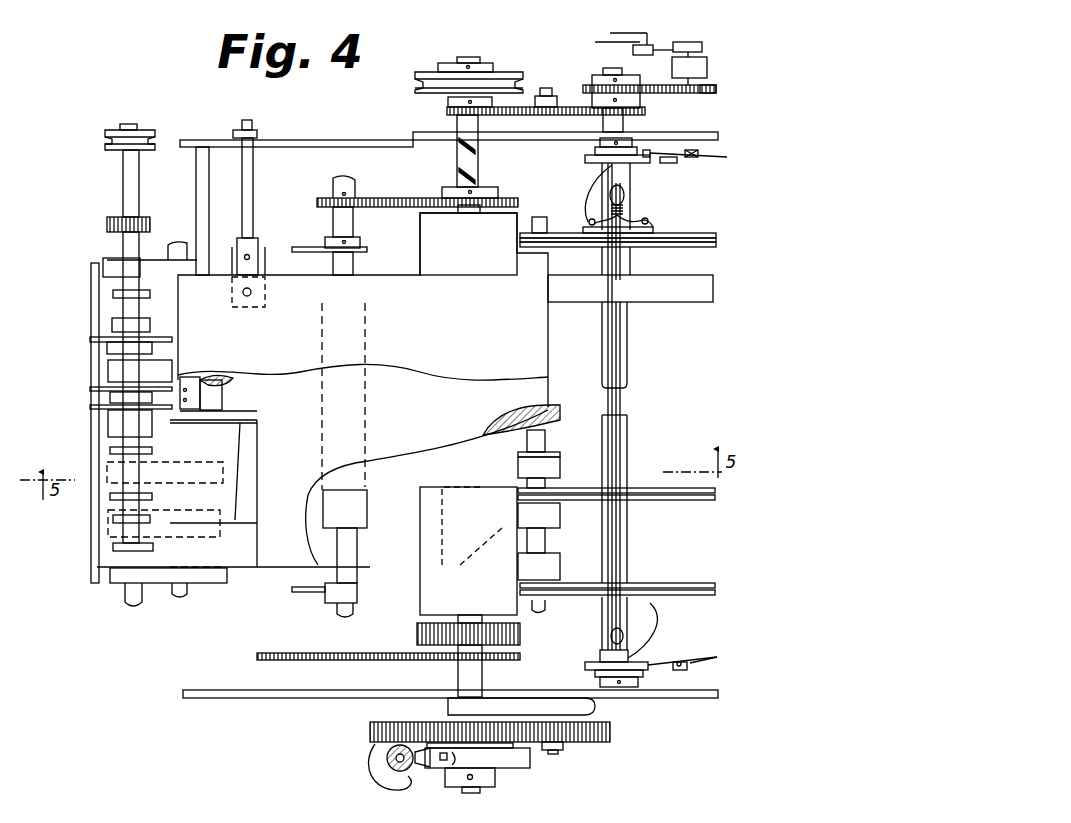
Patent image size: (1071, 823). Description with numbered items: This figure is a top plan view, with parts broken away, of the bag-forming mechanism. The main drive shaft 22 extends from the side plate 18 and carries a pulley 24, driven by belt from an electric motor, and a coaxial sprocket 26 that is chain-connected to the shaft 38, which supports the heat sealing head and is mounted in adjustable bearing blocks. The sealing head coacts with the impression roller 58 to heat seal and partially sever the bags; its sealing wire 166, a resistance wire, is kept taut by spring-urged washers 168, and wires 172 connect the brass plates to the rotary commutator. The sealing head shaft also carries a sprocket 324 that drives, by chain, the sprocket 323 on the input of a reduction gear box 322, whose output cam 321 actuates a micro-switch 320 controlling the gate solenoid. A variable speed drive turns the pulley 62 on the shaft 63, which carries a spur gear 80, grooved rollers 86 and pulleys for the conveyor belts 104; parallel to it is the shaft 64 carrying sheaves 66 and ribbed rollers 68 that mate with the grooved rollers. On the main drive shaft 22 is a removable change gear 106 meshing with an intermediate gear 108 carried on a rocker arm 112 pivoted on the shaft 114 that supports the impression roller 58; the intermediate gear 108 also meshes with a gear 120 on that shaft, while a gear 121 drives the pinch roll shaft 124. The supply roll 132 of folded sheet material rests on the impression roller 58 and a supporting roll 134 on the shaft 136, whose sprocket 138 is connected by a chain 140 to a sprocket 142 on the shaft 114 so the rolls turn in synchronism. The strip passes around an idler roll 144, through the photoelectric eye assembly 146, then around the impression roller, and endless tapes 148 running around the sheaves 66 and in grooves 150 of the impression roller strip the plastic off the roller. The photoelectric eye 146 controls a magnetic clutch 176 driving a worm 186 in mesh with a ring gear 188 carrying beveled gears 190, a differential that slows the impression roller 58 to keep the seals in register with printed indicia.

The side plate 18 is at (227, 695).
The main drive shaft 22 is at (467, 125).
The pulley 24 is at (435, 72).
The sprocket 26 is at (448, 103).
The shaft 38 is at (628, 437).
The impression roller 58 is at (438, 592).
The pulley 62 is at (106, 128).
The shaft 63 is at (130, 186).
The shaft 64 is at (128, 248).
The sheaves 66 is at (115, 327).
The ribbed rollers 68 is at (115, 450).
The spur gear 80 is at (107, 222).
The grooved rollers 86 is at (110, 348).
The conveyor belt 104 is at (120, 368).
The change gear 106 is at (367, 727).
The intermediate gear 108 is at (587, 732).
The rocker arm 112 is at (567, 703).
The shaft 114 is at (467, 177).
The gear 120 is at (513, 732).
The gear 121 is at (420, 637).
The shaft 124 is at (472, 158).
The supply roll 132 is at (473, 331).
The supporting roll 134 is at (358, 497).
The shaft 136 is at (350, 548).
The sprocket 138 is at (330, 193).
The chain 140 is at (378, 197).
The sprocket 142 is at (497, 193).
The idler roll 144 is at (193, 378).
The photoelectric eye assembly 146 is at (258, 253).
The endless tapes 148 is at (230, 520).
The grooves 150 is at (482, 503).
The electrical resistance wire 166 is at (612, 345).
The washers 168 is at (623, 210).
The wires 172 is at (587, 192).
The magnetic clutch 176 is at (385, 768).
The worm 186 is at (387, 758).
The ring gear 188 is at (513, 757).
The beveled gears 190 is at (430, 762).
The micro-switch 320 is at (647, 48).
The cam 321 is at (690, 42).
The reduction gear box 322 is at (672, 65).
The sprocket 323 is at (710, 86).
The sprocket 324 is at (642, 93).